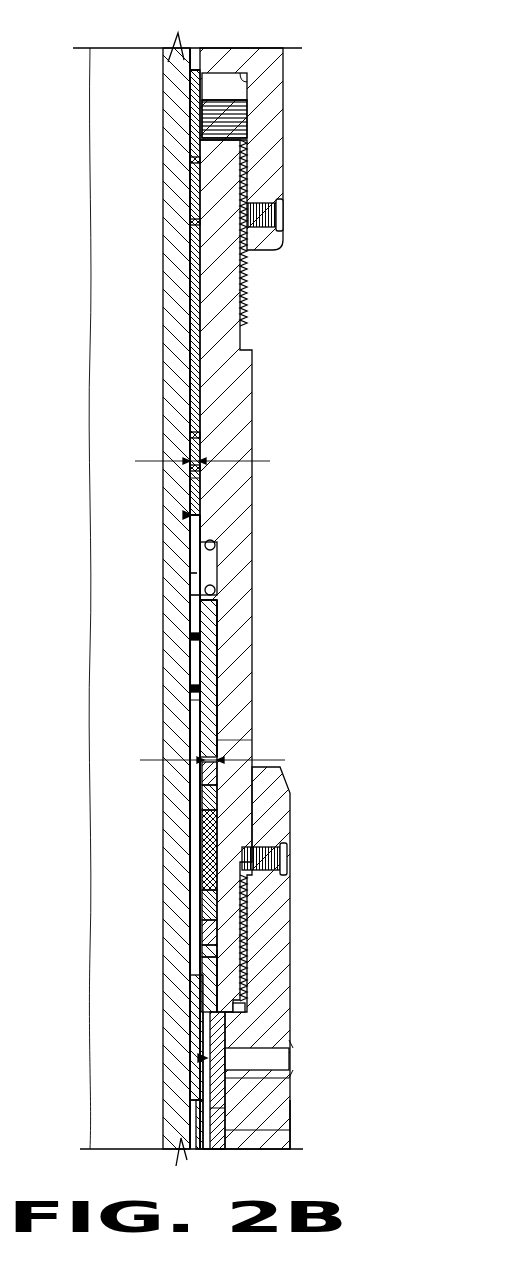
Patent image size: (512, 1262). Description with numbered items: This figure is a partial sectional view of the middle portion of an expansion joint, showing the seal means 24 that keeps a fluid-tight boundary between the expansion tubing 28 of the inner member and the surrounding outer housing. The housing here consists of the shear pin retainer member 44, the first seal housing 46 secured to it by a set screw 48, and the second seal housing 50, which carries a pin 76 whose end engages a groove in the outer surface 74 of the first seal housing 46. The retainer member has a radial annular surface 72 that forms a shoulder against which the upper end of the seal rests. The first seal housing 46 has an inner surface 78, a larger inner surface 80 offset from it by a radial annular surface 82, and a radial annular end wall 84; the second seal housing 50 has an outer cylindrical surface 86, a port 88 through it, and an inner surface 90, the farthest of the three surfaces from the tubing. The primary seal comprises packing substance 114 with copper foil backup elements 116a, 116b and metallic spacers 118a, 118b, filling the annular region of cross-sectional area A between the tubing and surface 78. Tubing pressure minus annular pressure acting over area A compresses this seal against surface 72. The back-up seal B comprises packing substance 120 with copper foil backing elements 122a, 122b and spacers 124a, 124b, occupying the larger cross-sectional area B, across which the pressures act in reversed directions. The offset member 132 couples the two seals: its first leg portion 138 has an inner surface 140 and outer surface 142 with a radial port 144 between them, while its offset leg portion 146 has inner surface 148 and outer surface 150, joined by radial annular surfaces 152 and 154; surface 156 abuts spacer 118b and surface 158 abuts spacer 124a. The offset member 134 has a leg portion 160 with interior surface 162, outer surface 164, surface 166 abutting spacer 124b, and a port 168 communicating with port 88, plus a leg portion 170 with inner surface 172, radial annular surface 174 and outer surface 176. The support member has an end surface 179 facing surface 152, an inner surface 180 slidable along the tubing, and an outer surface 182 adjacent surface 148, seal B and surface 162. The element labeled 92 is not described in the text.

The seal means 24 is at (202, 62).
The expansion tubing 28 is at (165, 658).
The shear pin retainer member 44 is at (270, 133).
The first seal housing 46 is at (240, 393).
The set screw 48 is at (283, 213).
The second seal housing 50 is at (280, 1003).
The radial annular surface 72 is at (245, 78).
The outer surface 74 is at (255, 578).
The pin 76 is at (288, 855).
The inner surface 78 is at (183, 515).
The inner surface 80 is at (212, 592).
The radial annular surface 82 is at (212, 552).
The radial annular end wall 84 is at (262, 1040).
The outer cylindrical surface 86 is at (292, 1130).
The port 88 is at (300, 1058).
The inner surface 90 is at (196, 1028).
The shoulder 92 is at (215, 1022).
The packing substance 114 is at (190, 298).
The copper foil backup element 116a is at (193, 222).
The copper foil backup element 116b is at (190, 435).
The upper metallic spacer 118a is at (195, 160).
The lower metallic spacer 118b is at (190, 468).
The packing substance 120 is at (202, 848).
The copper foil backing element 122a is at (202, 805).
The copper foil backing element 122b is at (202, 900).
The upper metallic spacer 124a is at (202, 771).
The lower metallic spacer 124b is at (202, 930).
The offset member 132 is at (222, 640).
The offset member 134 is at (215, 1108).
The first leg portion 138 is at (190, 573).
The inner surface 140 is at (190, 560).
The outer surface 142 is at (205, 530).
The radial port 144 is at (195, 591).
The leg portion 146 is at (212, 690).
The inner surface 148 is at (190, 688).
The outer surface 150 is at (215, 665).
The radial annular surface 152 is at (190, 636).
The radial annular surface 154 is at (208, 610).
The surface 156 is at (200, 478).
The surface 158 is at (225, 745).
The leg portion 160 is at (215, 987).
The interior surface 162 is at (192, 975).
The outer surface 164 is at (218, 955).
The surface 166 is at (202, 952).
The port 168 is at (198, 1058).
The leg portion 170 is at (225, 1150).
The inner surface 172 is at (180, 1148).
The radial annular surface 174 is at (196, 1130).
The outer surface 176 is at (292, 1140).
The radial annular end surface 179 is at (188, 703).
The inner surface 180 is at (188, 1100).
The outer surface 182 is at (258, 1078).
The cross-sectional area A is at (210, 464).
The cross-sectional area B is at (219, 763).